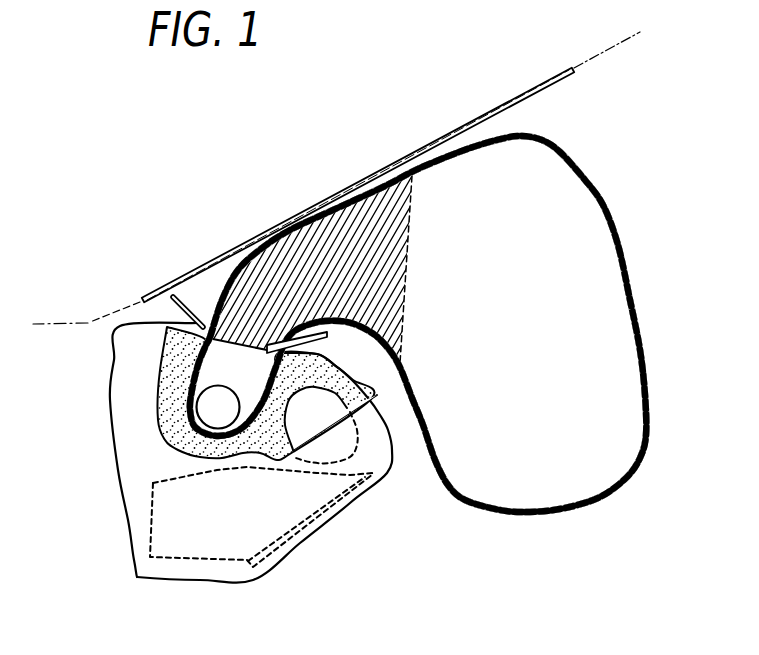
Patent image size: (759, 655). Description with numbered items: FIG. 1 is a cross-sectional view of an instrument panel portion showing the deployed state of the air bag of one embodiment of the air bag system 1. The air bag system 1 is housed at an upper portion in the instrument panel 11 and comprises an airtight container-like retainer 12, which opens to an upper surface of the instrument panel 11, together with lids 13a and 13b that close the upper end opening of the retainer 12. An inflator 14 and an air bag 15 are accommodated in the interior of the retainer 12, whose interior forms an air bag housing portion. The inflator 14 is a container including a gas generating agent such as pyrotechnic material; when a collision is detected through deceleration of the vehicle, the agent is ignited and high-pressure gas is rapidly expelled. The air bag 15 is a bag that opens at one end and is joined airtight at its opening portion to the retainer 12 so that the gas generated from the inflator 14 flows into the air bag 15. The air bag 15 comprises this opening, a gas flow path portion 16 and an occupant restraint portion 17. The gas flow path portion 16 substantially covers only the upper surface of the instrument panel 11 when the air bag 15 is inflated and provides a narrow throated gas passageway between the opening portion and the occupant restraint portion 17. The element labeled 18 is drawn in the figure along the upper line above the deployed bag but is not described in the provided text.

The air bag system 1 is at (688, 288).
The instrument panel 11 is at (367, 377).
The retainer 12 is at (170, 357).
The lid 13a is at (182, 308).
The lid 13b is at (290, 347).
The inflator 14 is at (213, 410).
The air bag 15 is at (613, 208).
The gas flow path portion 16 is at (380, 283).
The occupant restraint portion 17 is at (543, 373).
The hood 18 is at (545, 84).